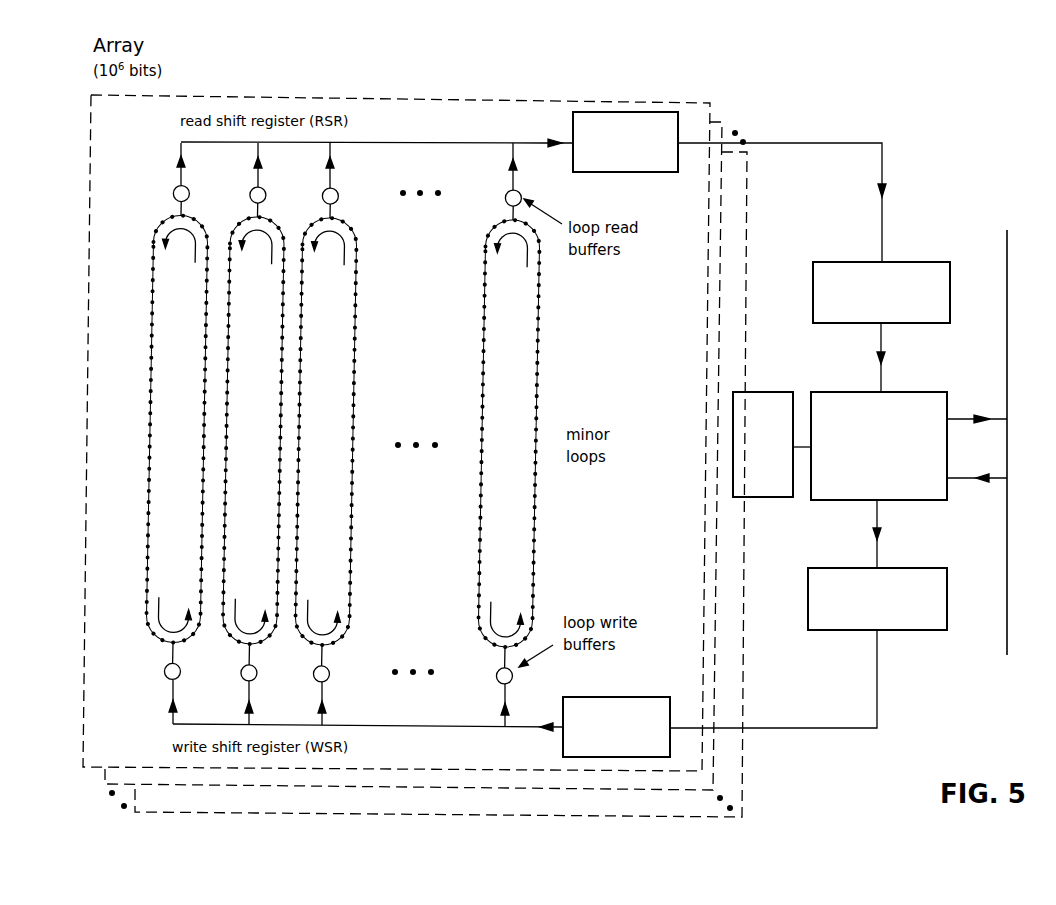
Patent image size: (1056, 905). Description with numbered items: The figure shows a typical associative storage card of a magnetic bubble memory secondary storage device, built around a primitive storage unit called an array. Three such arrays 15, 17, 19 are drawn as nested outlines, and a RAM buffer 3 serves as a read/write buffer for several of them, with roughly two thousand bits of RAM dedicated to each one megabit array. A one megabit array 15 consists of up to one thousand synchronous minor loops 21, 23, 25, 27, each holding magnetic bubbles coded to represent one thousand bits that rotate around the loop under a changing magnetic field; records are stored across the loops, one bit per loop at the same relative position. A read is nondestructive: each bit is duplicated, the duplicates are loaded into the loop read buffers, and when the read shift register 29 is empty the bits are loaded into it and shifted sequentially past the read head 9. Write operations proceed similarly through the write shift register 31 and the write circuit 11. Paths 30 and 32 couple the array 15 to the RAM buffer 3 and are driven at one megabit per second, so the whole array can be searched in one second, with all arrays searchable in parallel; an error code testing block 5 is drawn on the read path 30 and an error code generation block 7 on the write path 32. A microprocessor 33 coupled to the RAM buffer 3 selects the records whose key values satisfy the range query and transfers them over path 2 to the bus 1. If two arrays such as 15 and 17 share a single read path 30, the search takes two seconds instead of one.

The bus 1 is at (1007, 240).
The path 2 is at (980, 478).
The RAM buffer 3 is at (905, 392).
The error code testing circuit 5 is at (826, 262).
The error code generation circuit 7 is at (905, 568).
The read head 9 is at (622, 172).
The write circuit 11 is at (634, 697).
The array 15 is at (316, 96).
The array 17 is at (714, 738).
The array 19 is at (742, 808).
The minor loop 21 is at (190, 215).
The minor loop 23 is at (267, 216).
The minor loop 25 is at (341, 216).
The minor loop 27 is at (504, 221).
The read shift register 29 is at (440, 146).
The read path 30 is at (788, 147).
The write shift register 31 is at (460, 727).
The write path 32 is at (838, 733).
The microprocessor 33 is at (767, 392).